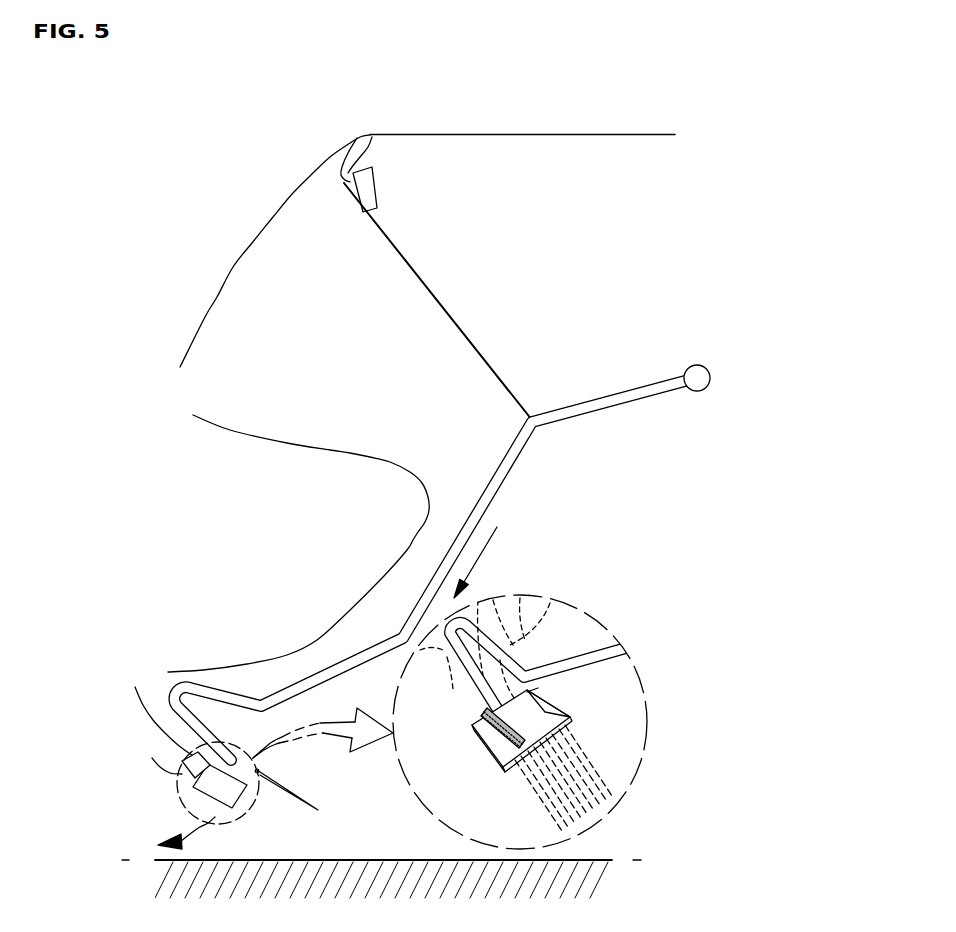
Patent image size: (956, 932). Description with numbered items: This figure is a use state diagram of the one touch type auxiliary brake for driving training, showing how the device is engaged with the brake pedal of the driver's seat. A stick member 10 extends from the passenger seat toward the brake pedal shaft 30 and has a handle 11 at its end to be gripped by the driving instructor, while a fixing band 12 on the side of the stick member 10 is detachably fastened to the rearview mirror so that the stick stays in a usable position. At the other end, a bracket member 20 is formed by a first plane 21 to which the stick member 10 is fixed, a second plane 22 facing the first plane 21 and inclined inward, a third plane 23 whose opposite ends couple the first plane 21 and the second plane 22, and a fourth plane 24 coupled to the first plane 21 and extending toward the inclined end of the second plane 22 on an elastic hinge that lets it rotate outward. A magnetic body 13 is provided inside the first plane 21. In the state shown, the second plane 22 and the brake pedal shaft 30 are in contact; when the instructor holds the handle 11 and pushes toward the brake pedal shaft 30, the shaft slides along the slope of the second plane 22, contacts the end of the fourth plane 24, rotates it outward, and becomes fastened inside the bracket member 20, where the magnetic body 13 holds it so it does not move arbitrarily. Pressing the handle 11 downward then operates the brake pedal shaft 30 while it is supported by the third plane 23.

The stick member 10 is at (497, 462).
The handle 11 is at (696, 366).
The fixing band 12 is at (441, 298).
The magnetic body 13 is at (482, 713).
The bracket member 20 is at (246, 801).
The first plane 21 is at (487, 753).
The second plane 22 is at (556, 717).
The third plane 23 is at (513, 765).
The fourth plane 24 is at (527, 692).
The brake pedal shaft 30 is at (478, 687).